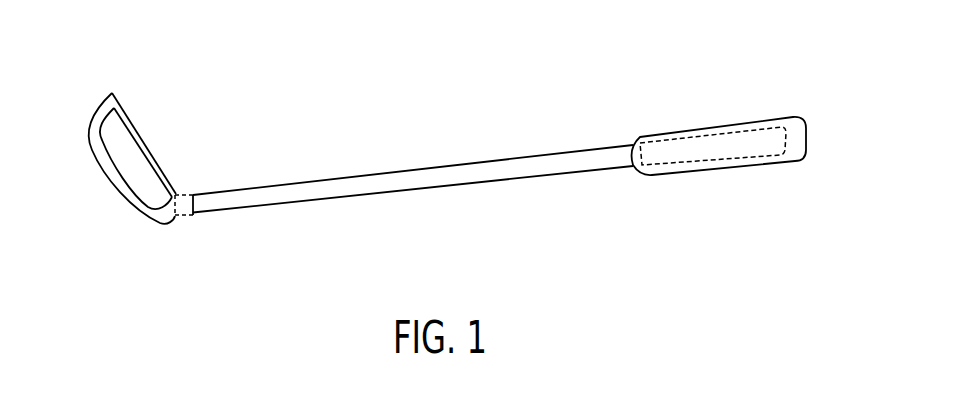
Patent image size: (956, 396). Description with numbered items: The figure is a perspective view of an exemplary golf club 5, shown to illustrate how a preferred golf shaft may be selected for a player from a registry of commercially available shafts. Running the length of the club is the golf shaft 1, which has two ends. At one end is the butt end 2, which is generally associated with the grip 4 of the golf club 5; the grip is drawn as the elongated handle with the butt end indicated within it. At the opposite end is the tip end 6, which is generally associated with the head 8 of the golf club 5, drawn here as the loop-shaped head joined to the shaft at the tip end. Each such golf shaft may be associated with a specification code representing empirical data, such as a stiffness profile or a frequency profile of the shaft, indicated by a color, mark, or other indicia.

The golf shaft 1 is at (413, 168).
The butt end 2 is at (717, 158).
The grip 4 is at (723, 118).
The golf club 5 is at (487, 93).
The tip end 6 is at (185, 216).
The head 8 is at (139, 113).